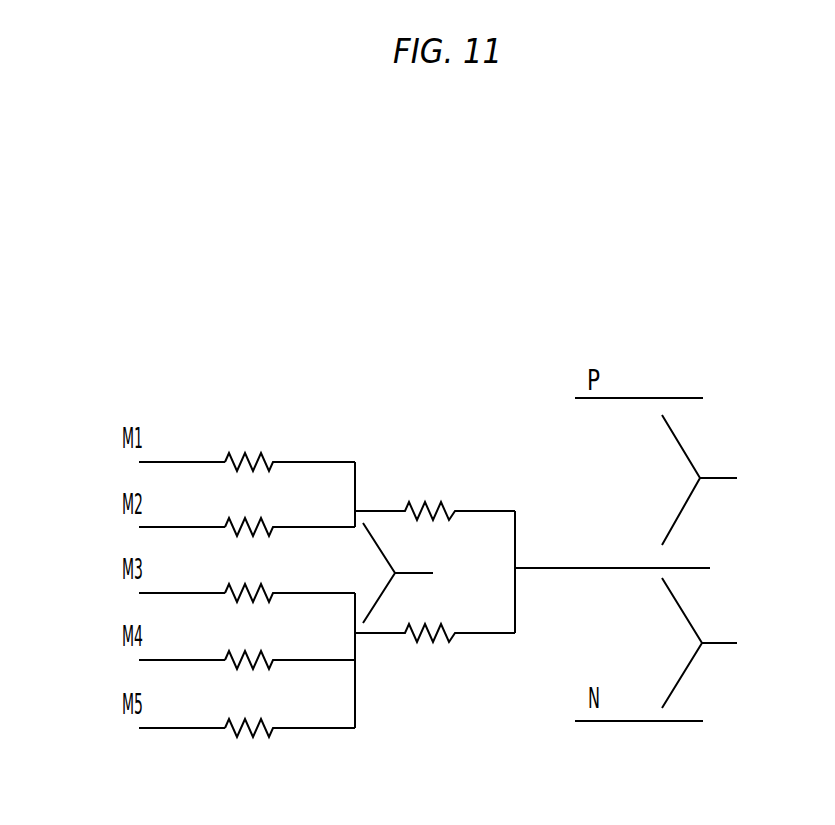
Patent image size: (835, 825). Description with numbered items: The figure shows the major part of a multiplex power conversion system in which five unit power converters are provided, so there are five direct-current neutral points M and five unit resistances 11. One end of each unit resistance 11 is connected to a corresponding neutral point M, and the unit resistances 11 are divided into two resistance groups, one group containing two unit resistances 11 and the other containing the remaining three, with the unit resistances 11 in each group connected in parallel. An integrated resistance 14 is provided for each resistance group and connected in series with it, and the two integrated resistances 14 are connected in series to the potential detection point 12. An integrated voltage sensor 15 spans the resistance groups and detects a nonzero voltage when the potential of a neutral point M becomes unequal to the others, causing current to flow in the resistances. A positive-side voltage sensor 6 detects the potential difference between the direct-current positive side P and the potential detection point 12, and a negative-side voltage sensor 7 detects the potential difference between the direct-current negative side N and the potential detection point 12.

The direct-current neutral point M is at (92, 427).
The unit resistance 11 is at (226, 455).
The integrated resistance 14 is at (410, 503).
The integrated voltage sensor 15 is at (412, 575).
The potential detection point 12 is at (572, 562).
The positive-side voltage sensor 6 is at (720, 482).
The negative-side voltage sensor 7 is at (710, 647).